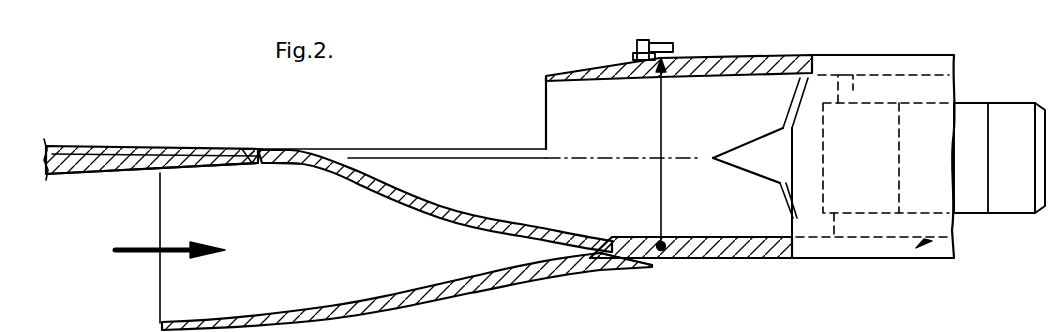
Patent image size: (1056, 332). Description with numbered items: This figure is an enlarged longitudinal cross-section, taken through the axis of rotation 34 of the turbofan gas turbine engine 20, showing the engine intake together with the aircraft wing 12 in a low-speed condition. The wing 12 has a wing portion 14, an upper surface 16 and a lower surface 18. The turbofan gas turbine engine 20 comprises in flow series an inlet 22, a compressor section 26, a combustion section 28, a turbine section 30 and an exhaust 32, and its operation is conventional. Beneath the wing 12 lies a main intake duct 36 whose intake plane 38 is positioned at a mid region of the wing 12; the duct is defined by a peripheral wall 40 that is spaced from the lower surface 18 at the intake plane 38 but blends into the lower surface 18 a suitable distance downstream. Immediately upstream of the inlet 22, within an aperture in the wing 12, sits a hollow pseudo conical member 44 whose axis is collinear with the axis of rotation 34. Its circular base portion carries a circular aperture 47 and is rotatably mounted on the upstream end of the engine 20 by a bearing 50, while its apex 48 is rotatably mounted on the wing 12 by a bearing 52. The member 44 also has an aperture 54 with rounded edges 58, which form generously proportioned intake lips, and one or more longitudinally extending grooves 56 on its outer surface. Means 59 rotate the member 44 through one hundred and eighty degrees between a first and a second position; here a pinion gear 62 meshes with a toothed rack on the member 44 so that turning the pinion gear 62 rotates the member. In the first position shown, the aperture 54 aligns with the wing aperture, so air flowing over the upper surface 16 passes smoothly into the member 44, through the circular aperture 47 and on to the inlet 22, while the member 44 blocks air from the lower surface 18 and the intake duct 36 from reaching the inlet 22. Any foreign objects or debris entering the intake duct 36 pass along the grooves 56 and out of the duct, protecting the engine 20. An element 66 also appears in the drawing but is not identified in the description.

The wing 12 is at (132, 146).
The wing portion 14 is at (219, 150).
The upper surface 16 is at (108, 146).
The lower surface 18 is at (86, 174).
The turbofan gas turbine engine 20 is at (955, 258).
The inlet 22 is at (657, 108).
The compressor section 26 is at (875, 133).
The combustion section 28 is at (920, 133).
The turbine section 30 is at (1006, 103).
The exhaust 32 is at (1040, 212).
The axis of rotation 34 is at (713, 158).
The main intake duct 36 is at (306, 258).
The intake plane 38 is at (160, 322).
The peripheral wall 40 is at (460, 297).
The hollow pseudo conical member 44 is at (581, 68).
The circular aperture 47 is at (667, 153).
The apex 48 is at (260, 170).
The bearing 50 is at (674, 257).
The bearing 52 is at (247, 146).
The aperture 54 is at (458, 148).
The longitudinally extending grooves 56 is at (593, 253).
The rounded edges 58 is at (386, 148).
The means to rotate 59 is at (666, 32).
The pinion gear 62 is at (638, 40).
The fitting base 66 is at (634, 54).